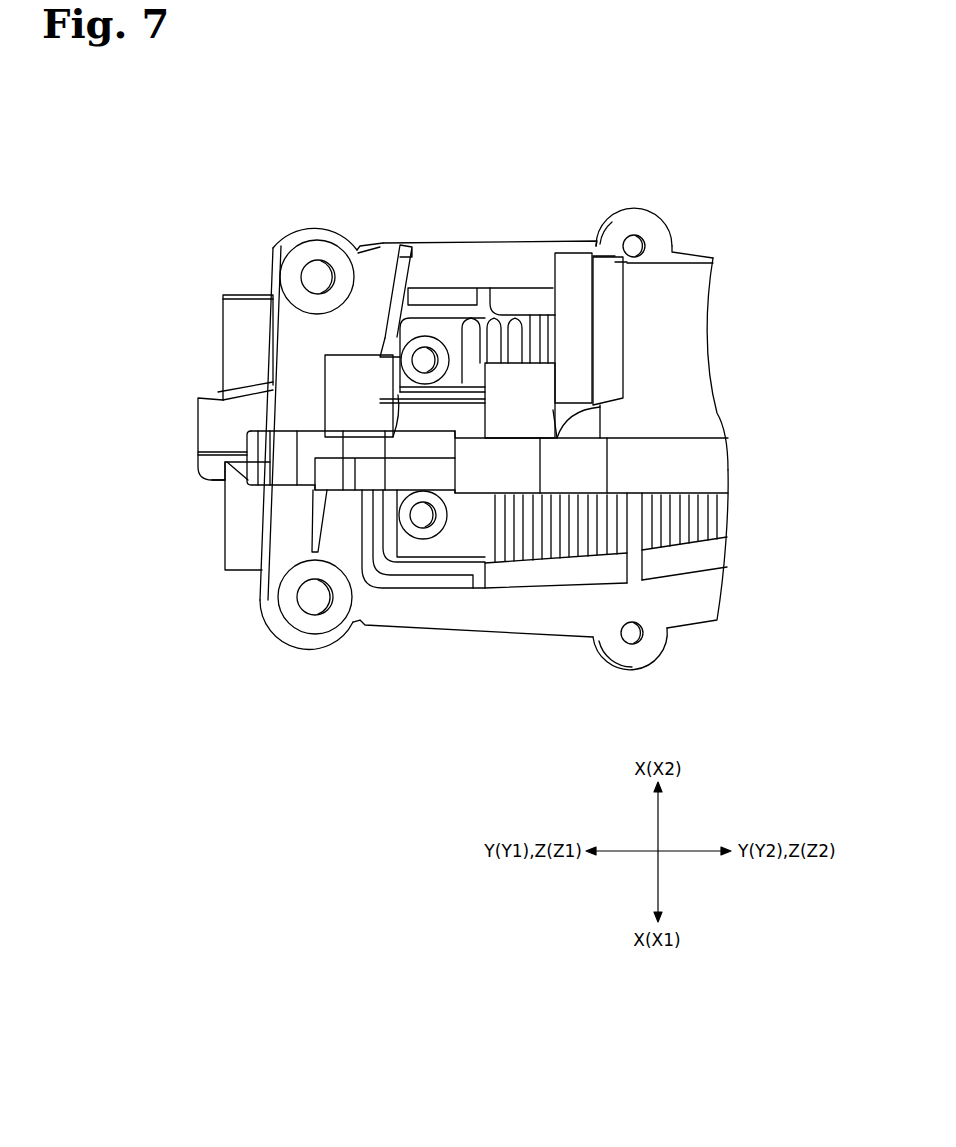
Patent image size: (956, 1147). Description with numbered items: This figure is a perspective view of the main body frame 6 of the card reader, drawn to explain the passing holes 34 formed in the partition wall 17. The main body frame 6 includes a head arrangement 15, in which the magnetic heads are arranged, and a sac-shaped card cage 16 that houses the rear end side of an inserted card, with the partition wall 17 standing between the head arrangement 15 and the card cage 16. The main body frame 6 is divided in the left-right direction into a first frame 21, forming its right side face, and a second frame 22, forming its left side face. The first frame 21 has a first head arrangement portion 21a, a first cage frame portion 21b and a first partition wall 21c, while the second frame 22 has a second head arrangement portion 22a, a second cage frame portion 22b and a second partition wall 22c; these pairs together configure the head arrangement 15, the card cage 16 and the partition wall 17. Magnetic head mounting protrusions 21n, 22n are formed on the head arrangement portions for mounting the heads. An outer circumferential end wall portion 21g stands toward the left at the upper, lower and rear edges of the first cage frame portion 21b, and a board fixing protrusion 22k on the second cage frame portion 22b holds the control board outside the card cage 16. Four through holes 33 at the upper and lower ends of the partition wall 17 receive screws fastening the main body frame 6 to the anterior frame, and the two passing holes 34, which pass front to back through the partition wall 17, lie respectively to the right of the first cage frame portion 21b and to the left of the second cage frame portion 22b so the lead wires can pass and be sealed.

The main body frame 6 is at (661, 133).
The head arrangement 15 is at (171, 441).
The card cage 16 is at (719, 227).
The partition wall 17 is at (377, 242).
The first frame 21 is at (520, 584).
The first partition wall 21c is at (480, 637).
The first head arrangement portion 21a is at (206, 481).
The first cage frame portion 21b is at (487, 440).
The outer circumferential end wall portion 21g is at (663, 438).
The magnetic head mounting protrusion 21n is at (243, 572).
The second frame 22 is at (554, 328).
The second partition wall 22c is at (505, 240).
The second head arrangement portion 22a is at (198, 405).
The second cage frame portion 22b is at (673, 262).
The board fixing protrusion 22k is at (347, 355).
The magnetic head mounting protrusion 22n is at (223, 320).
The through hole 33 is at (318, 277).
The passing hole 34 is at (427, 358).